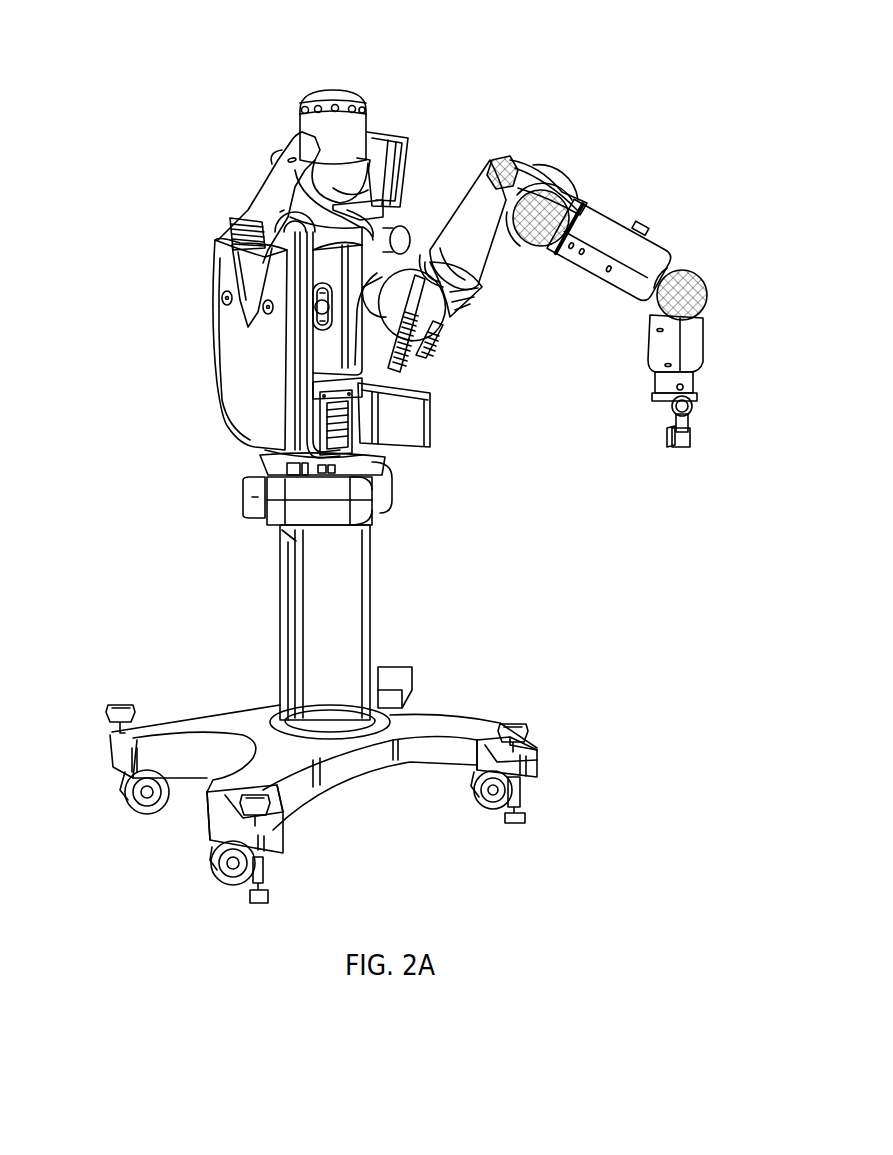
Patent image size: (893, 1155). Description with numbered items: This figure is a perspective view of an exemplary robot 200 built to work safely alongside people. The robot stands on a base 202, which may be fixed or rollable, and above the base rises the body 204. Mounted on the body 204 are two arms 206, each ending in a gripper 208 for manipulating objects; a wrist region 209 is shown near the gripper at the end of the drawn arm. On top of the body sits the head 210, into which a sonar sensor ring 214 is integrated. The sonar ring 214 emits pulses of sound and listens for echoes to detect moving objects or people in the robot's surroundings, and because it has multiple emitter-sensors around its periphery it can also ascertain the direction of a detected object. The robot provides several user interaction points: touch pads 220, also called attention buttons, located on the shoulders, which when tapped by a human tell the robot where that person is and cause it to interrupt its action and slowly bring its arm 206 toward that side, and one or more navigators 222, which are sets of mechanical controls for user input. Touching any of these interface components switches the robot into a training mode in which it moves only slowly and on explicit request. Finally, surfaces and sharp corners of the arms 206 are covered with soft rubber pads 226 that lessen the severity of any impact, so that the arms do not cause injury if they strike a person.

The robot 200 is at (213, 60).
The base 202 is at (93, 472).
The body 204 is at (155, 225).
The arms 206 is at (765, 150).
The grippers 208 is at (692, 432).
The wrist 209 is at (683, 382).
The head 210 is at (408, 207).
The sonar sensor ring 214 is at (360, 97).
The touch pads 220 is at (313, 310).
The navigators 222 is at (312, 318).
The soft rubber pads 226 is at (503, 157).